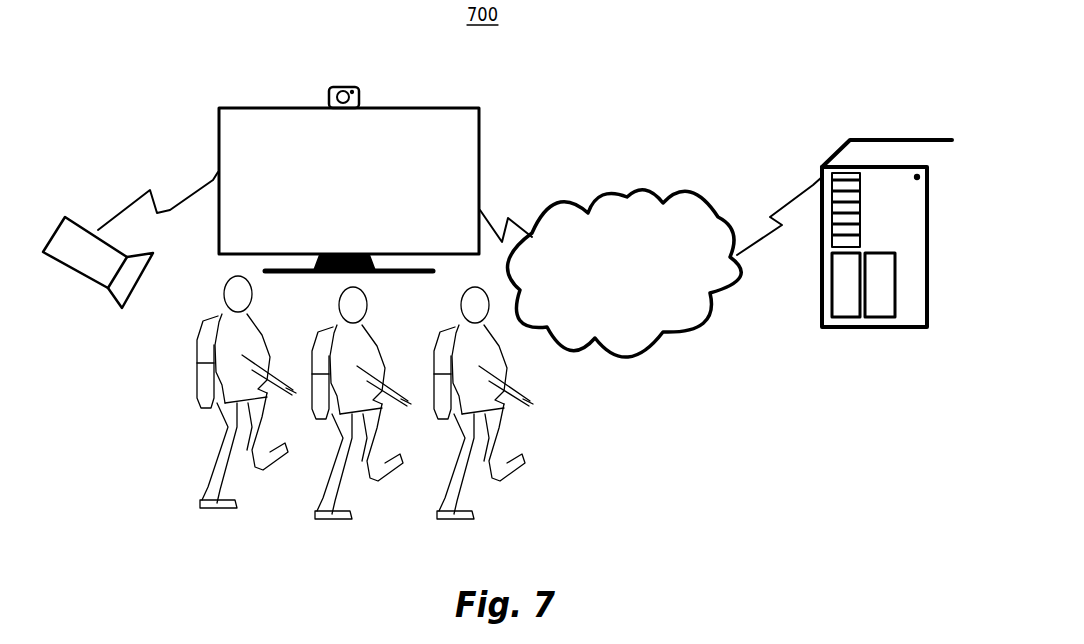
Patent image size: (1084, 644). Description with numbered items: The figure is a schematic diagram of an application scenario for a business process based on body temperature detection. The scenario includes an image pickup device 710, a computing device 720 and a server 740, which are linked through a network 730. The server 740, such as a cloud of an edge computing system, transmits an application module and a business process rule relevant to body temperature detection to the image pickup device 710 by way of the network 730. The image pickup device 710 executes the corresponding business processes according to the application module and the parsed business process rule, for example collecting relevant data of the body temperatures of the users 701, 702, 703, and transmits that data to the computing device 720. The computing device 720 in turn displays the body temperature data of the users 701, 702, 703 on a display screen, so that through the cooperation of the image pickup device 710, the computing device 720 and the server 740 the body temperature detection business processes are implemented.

The image pickup device 710 is at (201, 170).
The computing device 720 is at (343, 155).
The network 730 is at (651, 215).
The server 740 is at (887, 201).
The user 701 is at (200, 345).
The user 702 is at (333, 502).
The user 703 is at (522, 405).